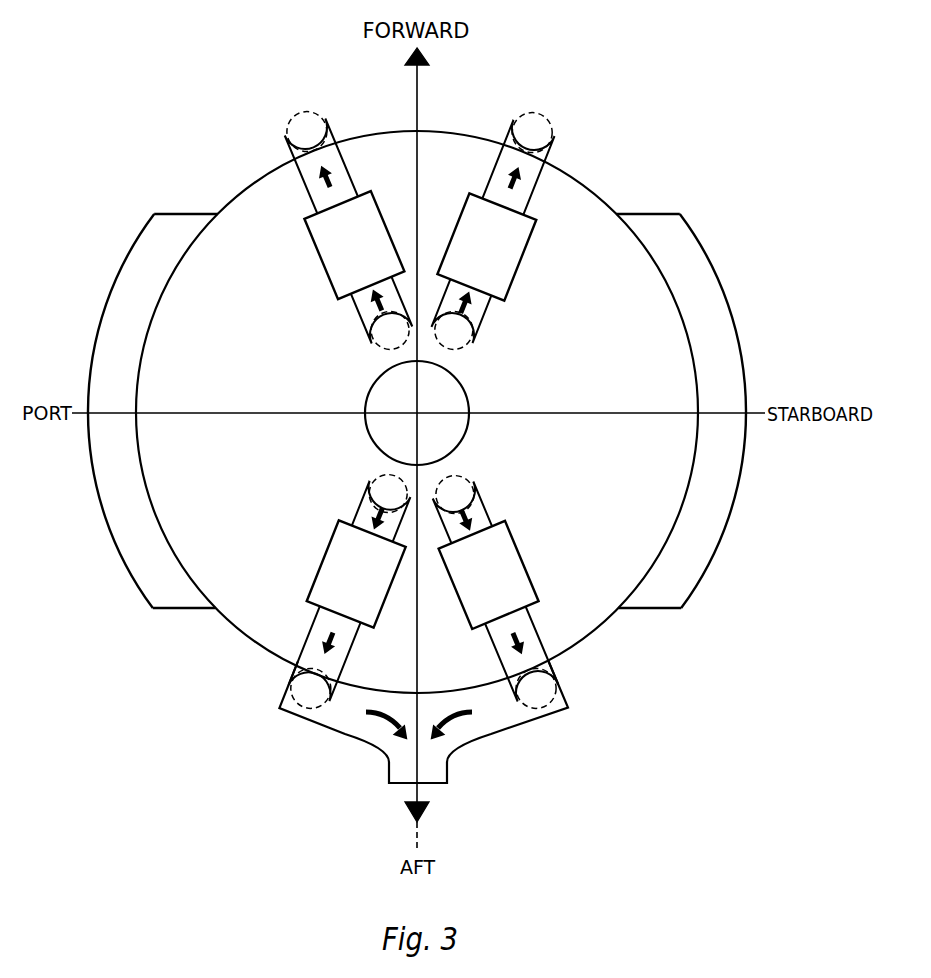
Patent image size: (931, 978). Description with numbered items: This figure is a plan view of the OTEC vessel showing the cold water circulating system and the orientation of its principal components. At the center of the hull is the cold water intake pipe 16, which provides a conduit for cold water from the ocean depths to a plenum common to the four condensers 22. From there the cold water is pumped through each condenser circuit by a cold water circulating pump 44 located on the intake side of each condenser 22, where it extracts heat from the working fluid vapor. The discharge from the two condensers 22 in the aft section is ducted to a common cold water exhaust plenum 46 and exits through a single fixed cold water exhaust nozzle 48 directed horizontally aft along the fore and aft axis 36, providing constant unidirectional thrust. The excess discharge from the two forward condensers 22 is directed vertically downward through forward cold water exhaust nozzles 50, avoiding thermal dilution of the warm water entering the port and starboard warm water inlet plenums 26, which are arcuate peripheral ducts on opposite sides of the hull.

The cold water intake pipe 16 is at (470, 396).
The condenser 22 is at (324, 258).
The warm water inlet plenum 26 is at (135, 241).
The fore and aft axis 36 is at (419, 85).
The cold water circulating pump 44 is at (376, 346).
The cold water exhaust plenum 46 is at (343, 727).
The cold water exhaust nozzle 48 is at (445, 783).
The forward cold water exhaust nozzle 50 is at (305, 107).